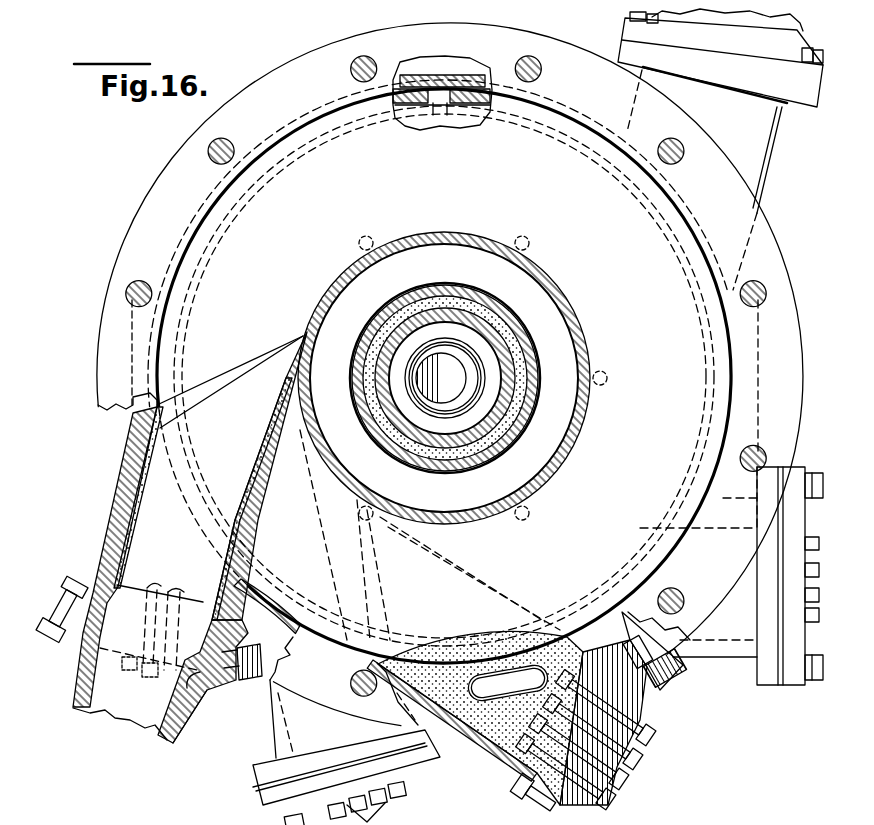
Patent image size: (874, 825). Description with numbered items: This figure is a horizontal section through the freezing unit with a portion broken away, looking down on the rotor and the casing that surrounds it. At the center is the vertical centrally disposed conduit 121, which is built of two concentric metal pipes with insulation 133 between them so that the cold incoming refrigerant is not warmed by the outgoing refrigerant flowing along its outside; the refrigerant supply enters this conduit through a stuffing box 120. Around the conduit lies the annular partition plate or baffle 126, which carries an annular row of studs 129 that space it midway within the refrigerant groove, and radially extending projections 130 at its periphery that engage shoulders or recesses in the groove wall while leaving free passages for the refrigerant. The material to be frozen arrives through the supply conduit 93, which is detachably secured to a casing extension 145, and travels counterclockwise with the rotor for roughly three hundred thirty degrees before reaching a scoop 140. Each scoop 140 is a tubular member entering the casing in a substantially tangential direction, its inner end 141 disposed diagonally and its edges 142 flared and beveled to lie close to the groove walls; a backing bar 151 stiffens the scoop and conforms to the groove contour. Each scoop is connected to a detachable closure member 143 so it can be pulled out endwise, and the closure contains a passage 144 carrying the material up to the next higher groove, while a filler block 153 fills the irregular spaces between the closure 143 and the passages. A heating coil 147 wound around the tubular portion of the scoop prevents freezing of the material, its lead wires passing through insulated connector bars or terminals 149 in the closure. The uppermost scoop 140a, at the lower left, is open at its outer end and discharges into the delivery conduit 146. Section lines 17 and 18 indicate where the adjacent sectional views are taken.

The supply conduit 93 is at (790, 38).
The stuffing box 120 is at (462, 382).
The vertical centrally disposed conduit 121 is at (503, 348).
The annular partition plate or baffle 126 is at (446, 118).
The studs 129 is at (365, 236).
The radially extending projections 130 is at (437, 100).
The insulation 133 is at (484, 316).
The scoop 140 is at (500, 755).
The uppermost scoop 140a is at (118, 548).
The inner ends 141 is at (299, 338).
The edges 142 is at (305, 334).
The detachable closure member 143 is at (205, 672).
The passage 144 is at (497, 672).
The casing extension 145 is at (770, 158).
The delivery conduit 146 is at (170, 740).
The heating coil 147 is at (258, 512).
The insulated connector bars or terminals 149 is at (150, 678).
The backing bar 151 is at (245, 556).
The filler block 153 is at (135, 493).
The section line 17 is at (262, 324).
The section line 18 is at (327, 540).